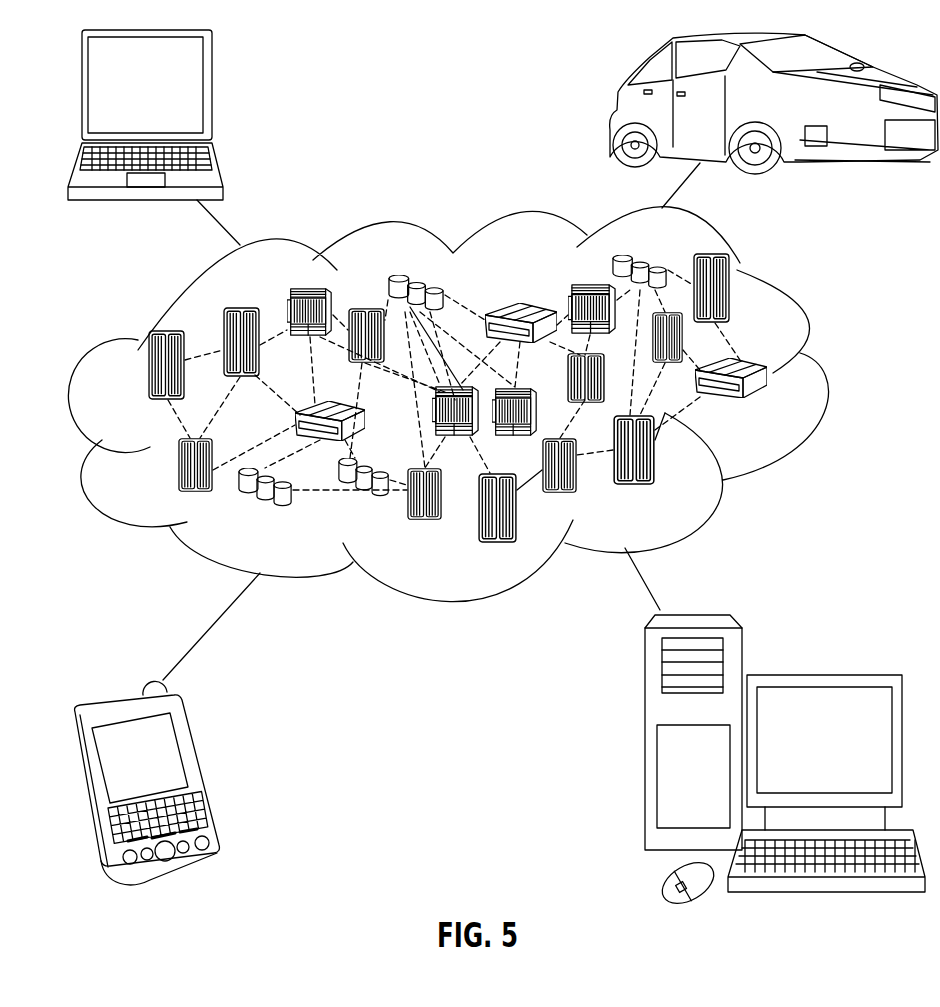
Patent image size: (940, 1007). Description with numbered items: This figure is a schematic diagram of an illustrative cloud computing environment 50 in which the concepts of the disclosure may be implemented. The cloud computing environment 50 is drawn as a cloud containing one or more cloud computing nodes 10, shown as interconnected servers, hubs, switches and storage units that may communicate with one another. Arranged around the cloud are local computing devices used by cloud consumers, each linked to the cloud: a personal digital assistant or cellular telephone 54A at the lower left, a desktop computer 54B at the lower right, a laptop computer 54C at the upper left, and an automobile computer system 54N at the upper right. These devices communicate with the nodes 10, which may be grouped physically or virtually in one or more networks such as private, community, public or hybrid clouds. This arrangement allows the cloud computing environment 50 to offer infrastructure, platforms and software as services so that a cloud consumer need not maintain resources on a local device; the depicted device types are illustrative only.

The cloud computing nodes 10 is at (776, 414).
The cloud computing environment 50 is at (820, 372).
The personal digital assistant (PDA) or cellular telephone 54A is at (193, 770).
The desktop computer 54B is at (820, 675).
The laptop computer 54C is at (212, 93).
The automobile computer system 54N is at (615, 108).